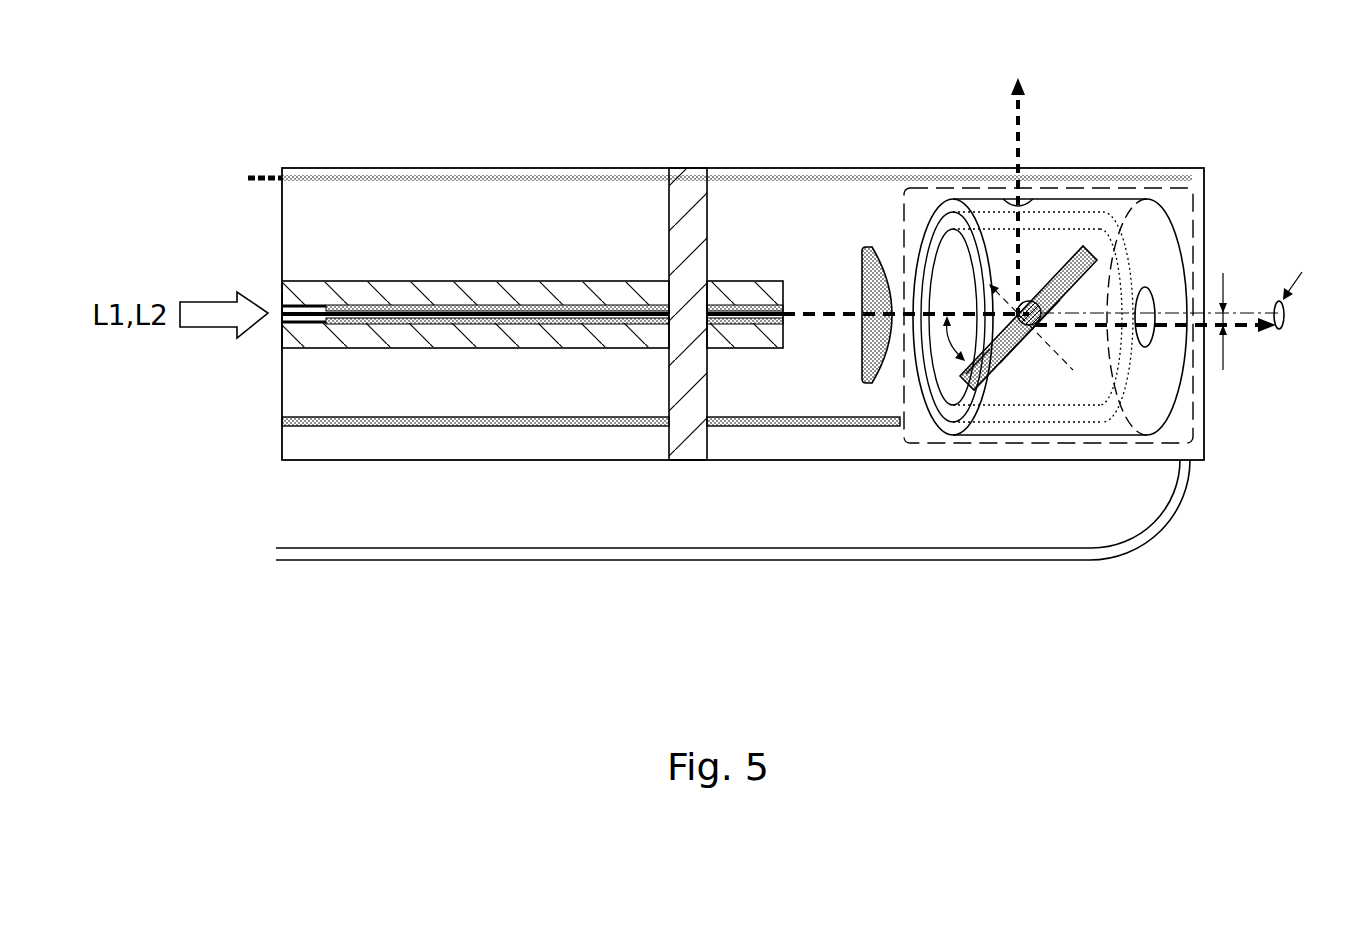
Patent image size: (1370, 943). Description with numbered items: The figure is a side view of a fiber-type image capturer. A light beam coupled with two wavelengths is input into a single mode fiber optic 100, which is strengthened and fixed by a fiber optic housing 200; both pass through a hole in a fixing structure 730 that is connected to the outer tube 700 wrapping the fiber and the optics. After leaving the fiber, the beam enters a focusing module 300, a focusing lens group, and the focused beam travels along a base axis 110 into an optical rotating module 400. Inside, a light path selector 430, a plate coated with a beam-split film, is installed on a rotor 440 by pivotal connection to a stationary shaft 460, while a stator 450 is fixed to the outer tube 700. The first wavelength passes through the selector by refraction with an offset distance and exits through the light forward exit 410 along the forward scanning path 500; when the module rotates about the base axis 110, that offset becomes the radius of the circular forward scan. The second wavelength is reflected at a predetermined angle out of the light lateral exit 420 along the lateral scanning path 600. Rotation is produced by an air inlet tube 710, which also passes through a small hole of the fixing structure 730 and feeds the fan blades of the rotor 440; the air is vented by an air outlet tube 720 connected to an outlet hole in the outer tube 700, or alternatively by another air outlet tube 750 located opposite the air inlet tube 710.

The single mode fiber optic 100 is at (383, 303).
The base axis 110 is at (1253, 310).
The fiber optic housing 200 is at (470, 283).
The focusing module 300 is at (874, 250).
The optical rotating module 400 is at (930, 188).
The light forward exit 410 is at (1146, 287).
The light lateral exit 420 is at (1013, 198).
The light path selector 430 is at (1083, 250).
The rotor 440 is at (945, 413).
The stator 450 is at (1168, 232).
The stationary shaft 460 is at (1034, 338).
The forward scanning path 500 is at (1257, 343).
The lateral scanning path 600 is at (1027, 117).
The outer tube 700 is at (365, 460).
The air inlet tube 710 is at (478, 427).
The air outlet tube 720 is at (690, 562).
The fixing structure 730 is at (690, 190).
The air outlet tube 750 is at (1180, 175).